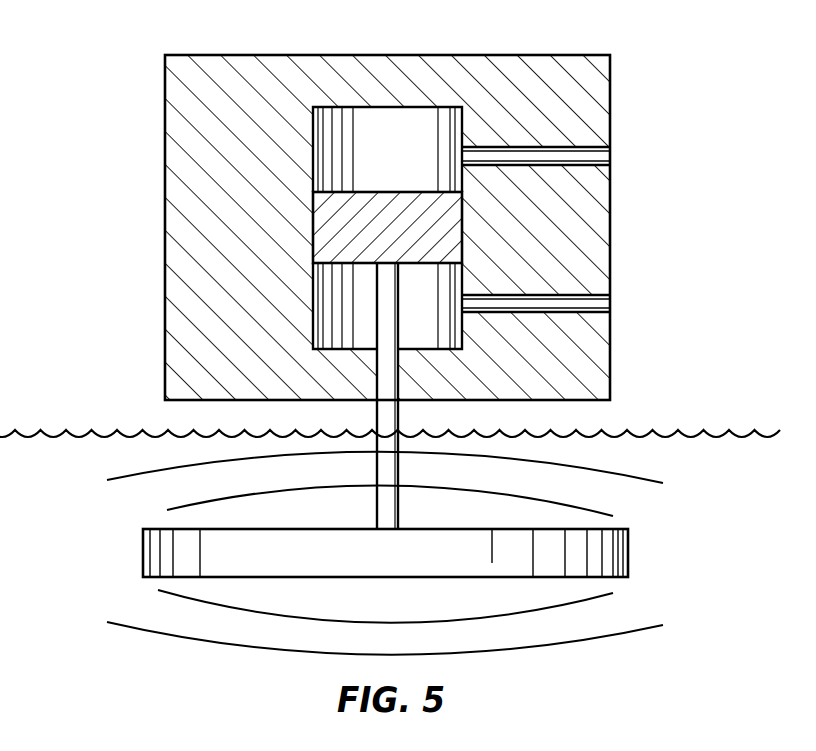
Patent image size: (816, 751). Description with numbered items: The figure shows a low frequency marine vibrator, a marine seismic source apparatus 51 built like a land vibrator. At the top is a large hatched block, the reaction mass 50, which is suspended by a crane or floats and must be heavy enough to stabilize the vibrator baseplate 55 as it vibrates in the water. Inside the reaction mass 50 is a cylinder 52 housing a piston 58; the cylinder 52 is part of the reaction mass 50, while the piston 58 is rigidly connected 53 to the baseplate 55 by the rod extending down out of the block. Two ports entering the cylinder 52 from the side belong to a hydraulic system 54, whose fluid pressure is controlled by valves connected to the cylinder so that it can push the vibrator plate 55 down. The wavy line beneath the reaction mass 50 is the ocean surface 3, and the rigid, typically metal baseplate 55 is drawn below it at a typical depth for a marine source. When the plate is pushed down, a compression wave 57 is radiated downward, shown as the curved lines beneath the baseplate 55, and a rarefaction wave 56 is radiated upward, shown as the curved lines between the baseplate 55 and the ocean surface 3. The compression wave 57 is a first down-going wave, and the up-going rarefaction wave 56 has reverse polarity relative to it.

The ocean surface 3 is at (82, 432).
The reaction mass 50 is at (172, 53).
The marine seismic source apparatus 51 is at (636, 73).
The cylinder 52 is at (427, 118).
The rigid connection 53 is at (399, 425).
The hydraulic system 54 is at (601, 159).
The vibrator baseplate 55 is at (143, 553).
The rarefaction wave 56 is at (167, 512).
The compression wave 57 is at (158, 590).
The piston 58 is at (322, 212).